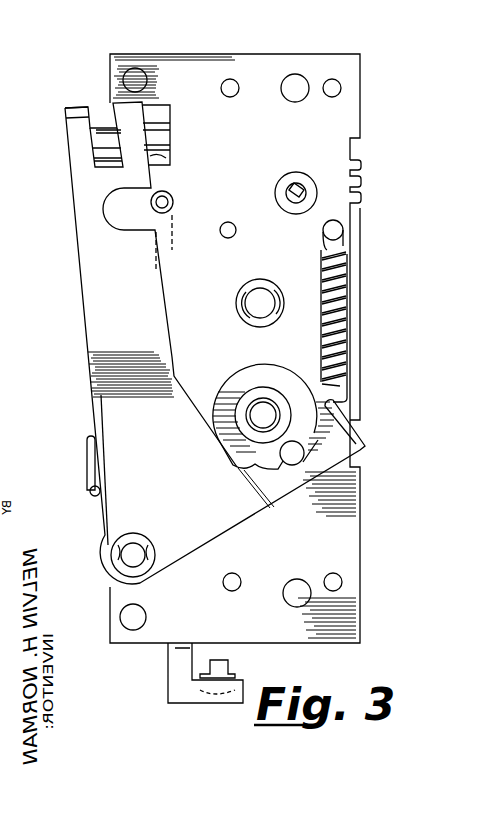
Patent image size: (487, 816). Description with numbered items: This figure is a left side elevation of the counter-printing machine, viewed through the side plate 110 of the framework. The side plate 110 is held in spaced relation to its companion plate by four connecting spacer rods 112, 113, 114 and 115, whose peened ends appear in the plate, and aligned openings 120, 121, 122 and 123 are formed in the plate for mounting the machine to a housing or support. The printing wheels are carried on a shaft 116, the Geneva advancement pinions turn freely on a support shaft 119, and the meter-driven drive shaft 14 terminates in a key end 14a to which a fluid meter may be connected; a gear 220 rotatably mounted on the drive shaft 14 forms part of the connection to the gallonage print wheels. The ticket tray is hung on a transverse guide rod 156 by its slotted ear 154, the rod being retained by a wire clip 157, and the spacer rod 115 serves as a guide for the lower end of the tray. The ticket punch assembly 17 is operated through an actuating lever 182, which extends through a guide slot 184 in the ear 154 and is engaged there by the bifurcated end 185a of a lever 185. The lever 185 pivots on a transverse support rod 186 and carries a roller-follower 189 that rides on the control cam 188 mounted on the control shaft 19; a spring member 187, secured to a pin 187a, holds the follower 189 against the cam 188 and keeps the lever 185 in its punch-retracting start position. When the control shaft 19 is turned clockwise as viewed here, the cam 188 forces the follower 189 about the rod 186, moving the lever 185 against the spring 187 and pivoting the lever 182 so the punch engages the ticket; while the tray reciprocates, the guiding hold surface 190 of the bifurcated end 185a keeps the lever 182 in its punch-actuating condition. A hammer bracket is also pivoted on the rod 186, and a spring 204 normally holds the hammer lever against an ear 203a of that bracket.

The side plate 110 is at (268, 147).
The connecting spacer rod 112 is at (341, 88).
The connecting spacer rod 113 is at (230, 82).
The connecting spacer rod 114 is at (342, 582).
The connecting spacer rod 115 is at (227, 588).
The shaft 116 is at (266, 296).
The support shaft 119 is at (230, 238).
The opening 120 is at (295, 80).
The opening 121 is at (136, 68).
The opening 122 is at (296, 603).
The opening 123 is at (133, 628).
The drive shaft 14 is at (292, 198).
The key end 14a is at (298, 186).
The ticket punch assembly 17 is at (68, 189).
The slotted ear 154 is at (163, 137).
The transverse guide rod 156 is at (178, 192).
The wire clip 157 is at (173, 210).
The actuating lever 182 is at (95, 165).
The guide slot 184 is at (160, 157).
The lever 185 is at (136, 306).
The bifurcated end 185a is at (70, 112).
The transverse support rod 186 is at (140, 550).
The spring member 187 is at (348, 298).
The pin 187a is at (343, 230).
The control cam 188 is at (262, 366).
The roller-follower 189 is at (292, 466).
The control shaft 19 is at (270, 404).
The guiding hold surface 190 is at (88, 104).
The ear 203a is at (87, 459).
The spring 204 is at (93, 495).
The gear 220 is at (360, 180).